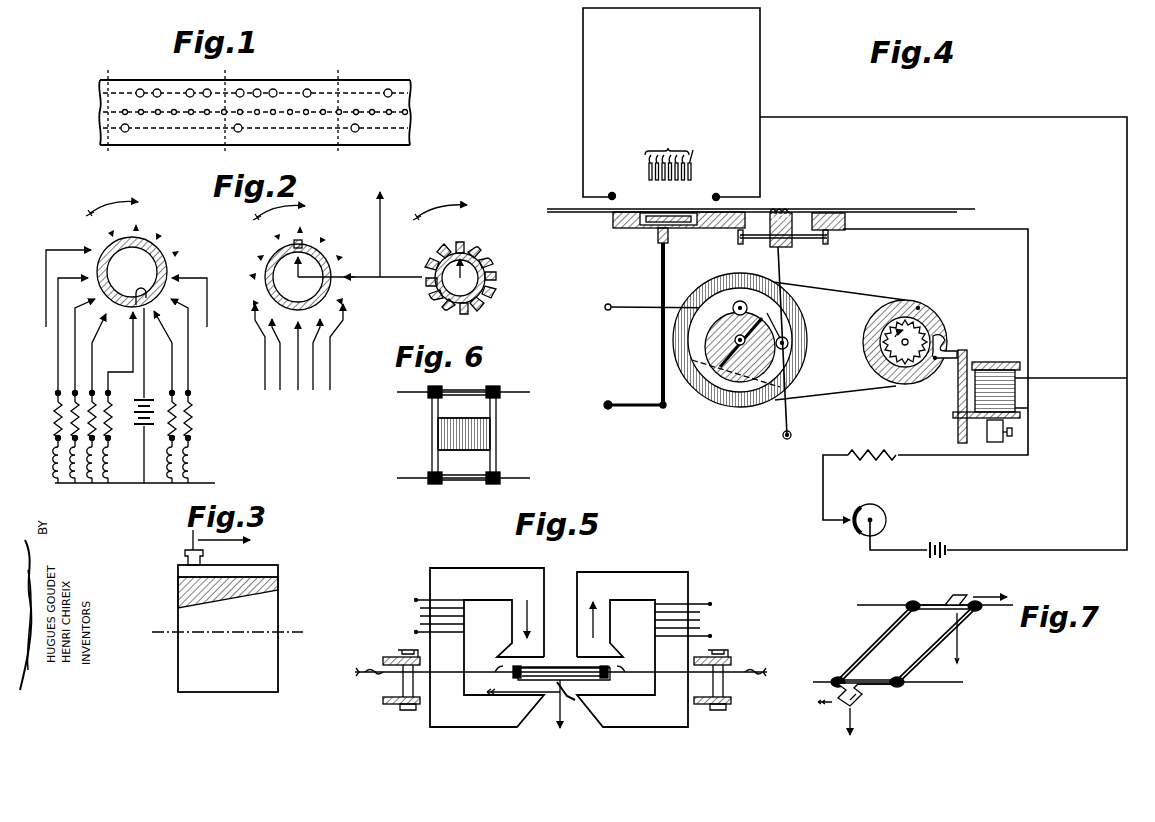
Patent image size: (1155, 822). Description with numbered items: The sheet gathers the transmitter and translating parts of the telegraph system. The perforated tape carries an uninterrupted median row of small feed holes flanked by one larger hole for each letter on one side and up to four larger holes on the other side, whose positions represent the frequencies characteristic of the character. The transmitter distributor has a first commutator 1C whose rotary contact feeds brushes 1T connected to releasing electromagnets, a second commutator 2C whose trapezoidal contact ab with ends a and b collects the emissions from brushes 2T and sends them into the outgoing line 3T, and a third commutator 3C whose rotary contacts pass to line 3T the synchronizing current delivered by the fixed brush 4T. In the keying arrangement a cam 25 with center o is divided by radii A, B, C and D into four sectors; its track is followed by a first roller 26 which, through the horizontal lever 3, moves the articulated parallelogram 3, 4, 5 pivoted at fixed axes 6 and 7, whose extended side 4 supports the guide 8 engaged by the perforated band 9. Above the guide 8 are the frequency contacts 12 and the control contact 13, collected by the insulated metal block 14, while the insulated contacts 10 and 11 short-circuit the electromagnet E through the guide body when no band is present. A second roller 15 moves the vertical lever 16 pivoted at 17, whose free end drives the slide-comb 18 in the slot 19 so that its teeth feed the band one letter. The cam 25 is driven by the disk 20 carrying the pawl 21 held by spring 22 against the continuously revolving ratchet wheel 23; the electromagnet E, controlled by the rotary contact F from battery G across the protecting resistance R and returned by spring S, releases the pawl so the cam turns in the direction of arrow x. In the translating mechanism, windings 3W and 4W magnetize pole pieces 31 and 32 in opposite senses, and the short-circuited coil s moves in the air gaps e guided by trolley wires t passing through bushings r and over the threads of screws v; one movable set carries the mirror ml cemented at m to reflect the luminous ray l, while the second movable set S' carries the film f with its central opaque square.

In FIG. 2, the first commutator 1C is at (132, 254).
In FIG. 2, the second commutator 2C is at (335, 297).
In FIG. 2, the third commutator 3C is at (454, 259).
In FIG. 2, the brushes 1T is at (151, 217).
In FIG. 2, the brushes 2T is at (316, 225).
In FIG. 3, the brushes 2T is at (227, 611).
In FIG. 2, the outgoing line 3T is at (382, 222).
In FIG. 2, the fixed brush 4T is at (430, 312).
In FIG. 2, the contact ab is at (300, 243).
In FIG. 3, the contact end a is at (220, 592).
In FIG. 3, the contact end b is at (288, 580).
In FIG. 2, the battery G is at (140, 427).
In FIG. 4, the battery G is at (855, 283).
In FIG. 4, the horizontal lever 3 is at (633, 302).
In FIG. 4, the extended side of parallelogram 4 is at (661, 370).
In FIG. 4, the parallelogram link 5 is at (625, 406).
In FIG. 4, the fixed axis 6 is at (601, 405).
In FIG. 4, the fixed axis 7 is at (662, 307).
In FIG. 4, the guide 8 is at (717, 224).
In FIG. 4, the perforated paper band 9 is at (761, 202).
In FIG. 4, the insulated contact 10 is at (611, 188).
In FIG. 4, the insulated contact 11 is at (726, 188).
In FIG. 4, the contacts 12 is at (659, 159).
In FIG. 4, the control contact 13 is at (701, 161).
In FIG. 4, the metal block 14 is at (648, 226).
In FIG. 4, the second roller 15 is at (788, 343).
In FIG. 4, the vertical lever 16 is at (781, 272).
In FIG. 4, the pivot 17 is at (798, 434).
In FIG. 4, the slide-comb 18 is at (777, 247).
In FIG. 4, the slot 19 is at (800, 217).
In FIG. 4, the disk 20 is at (908, 312).
In FIG. 4, the pawl 21 is at (947, 338).
In FIG. 4, the spring 22 is at (940, 313).
In FIG. 4, the ratchet wheel 23 is at (885, 382).
In FIG. 4, the cam 25 is at (747, 375).
In FIG. 4, the first roller 26 is at (773, 313).
In FIG. 4, the cam sector radius A is at (727, 322).
In FIG. 4, the cam sector radius B is at (780, 300).
In FIG. 4, the cam sector radius C is at (797, 402).
In FIG. 4, the cam sector radius D is at (702, 382).
In FIG. 4, the electromagnet E is at (1040, 394).
In FIG. 4, the rotary contact F is at (879, 508).
In FIG. 4, the protecting resistance R is at (925, 374).
In FIG. 4, the spring / movable winding S is at (992, 435).
In FIG. 7, the spring / movable winding S is at (906, 644).
In FIG. 4, the arrow of rotation x is at (719, 265).
In FIG. 4, the center o is at (740, 350).
In FIG. 5, the pole piece 31 is at (487, 640).
In FIG. 5, the pole piece 32 is at (632, 640).
In FIG. 5, the winding 3W is at (432, 616).
In FIG. 5, the winding 4W is at (694, 620).
In FIG. 5, the air gap e is at (560, 678).
In FIG. 5, the coil s is at (561, 678).
In FIG. 5, the luminous ray l is at (531, 712).
In FIG. 7, the luminous ray l is at (855, 726).
In FIG. 6, the trolley wire t is at (463, 427).
In FIG. 5, the trolley wire t is at (668, 672).
In FIG. 7, the trolley wire t is at (913, 636).
In FIG. 5, the screw v is at (732, 648).
In FIG. 6, the second movable set S' is at (441, 435).
In FIG. 6, the photographic film f is at (475, 434).
In FIG. 6, the bushing r is at (466, 435).
In FIG. 7, the bushing r is at (905, 645).
In FIG. 7, the mirror ml is at (976, 621).
In FIG. 7, the mirror cementing point m is at (854, 698).